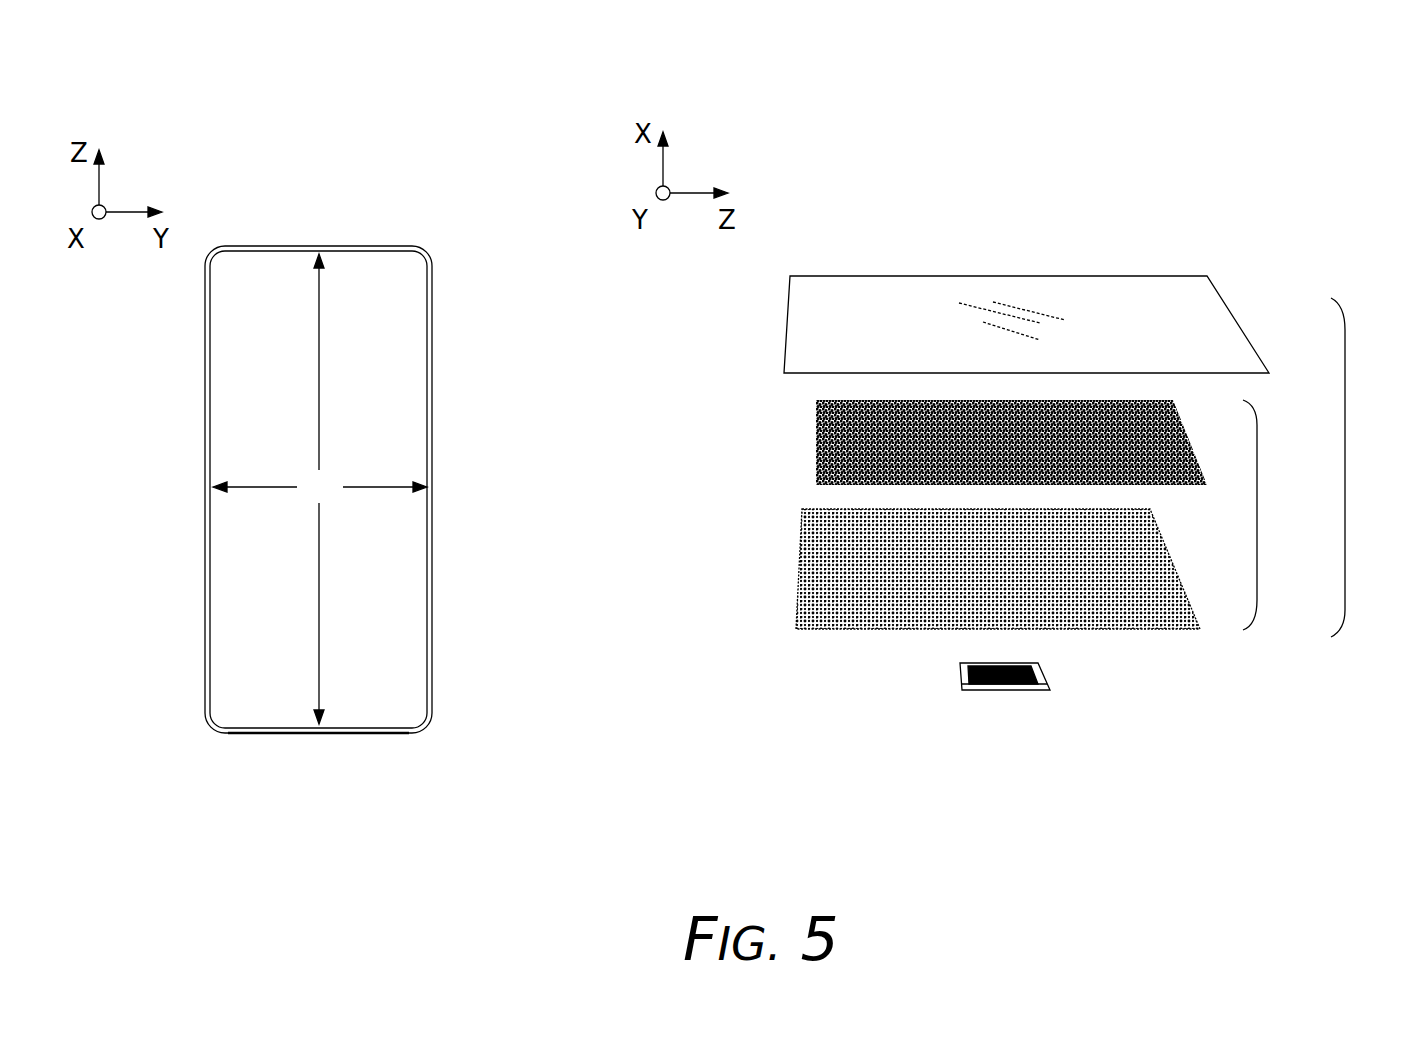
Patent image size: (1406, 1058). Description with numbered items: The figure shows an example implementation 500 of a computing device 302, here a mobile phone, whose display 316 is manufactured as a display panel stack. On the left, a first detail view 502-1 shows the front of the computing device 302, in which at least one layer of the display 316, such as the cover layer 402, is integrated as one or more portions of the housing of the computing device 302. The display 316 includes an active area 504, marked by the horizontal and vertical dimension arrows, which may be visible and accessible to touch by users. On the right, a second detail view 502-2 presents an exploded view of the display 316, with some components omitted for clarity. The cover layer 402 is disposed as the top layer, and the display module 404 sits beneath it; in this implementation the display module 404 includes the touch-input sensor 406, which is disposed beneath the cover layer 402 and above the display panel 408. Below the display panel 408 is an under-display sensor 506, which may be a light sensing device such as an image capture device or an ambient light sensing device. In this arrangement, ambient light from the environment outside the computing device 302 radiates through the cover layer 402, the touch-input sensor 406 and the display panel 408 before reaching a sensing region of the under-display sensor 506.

The example implementation 500 is at (1312, 78).
The computing device 302 is at (343, 247).
The display 316 is at (402, 422).
The active area 504 is at (320, 489).
The first detail view 502-1 is at (353, 790).
The second detail view 502-2 is at (1044, 767).
The cover layer 402 is at (787, 330).
The display module 404 is at (1257, 516).
The touch-input sensor 406 is at (814, 444).
The display panel 408 is at (800, 565).
The under-display sensor 506 is at (958, 677).